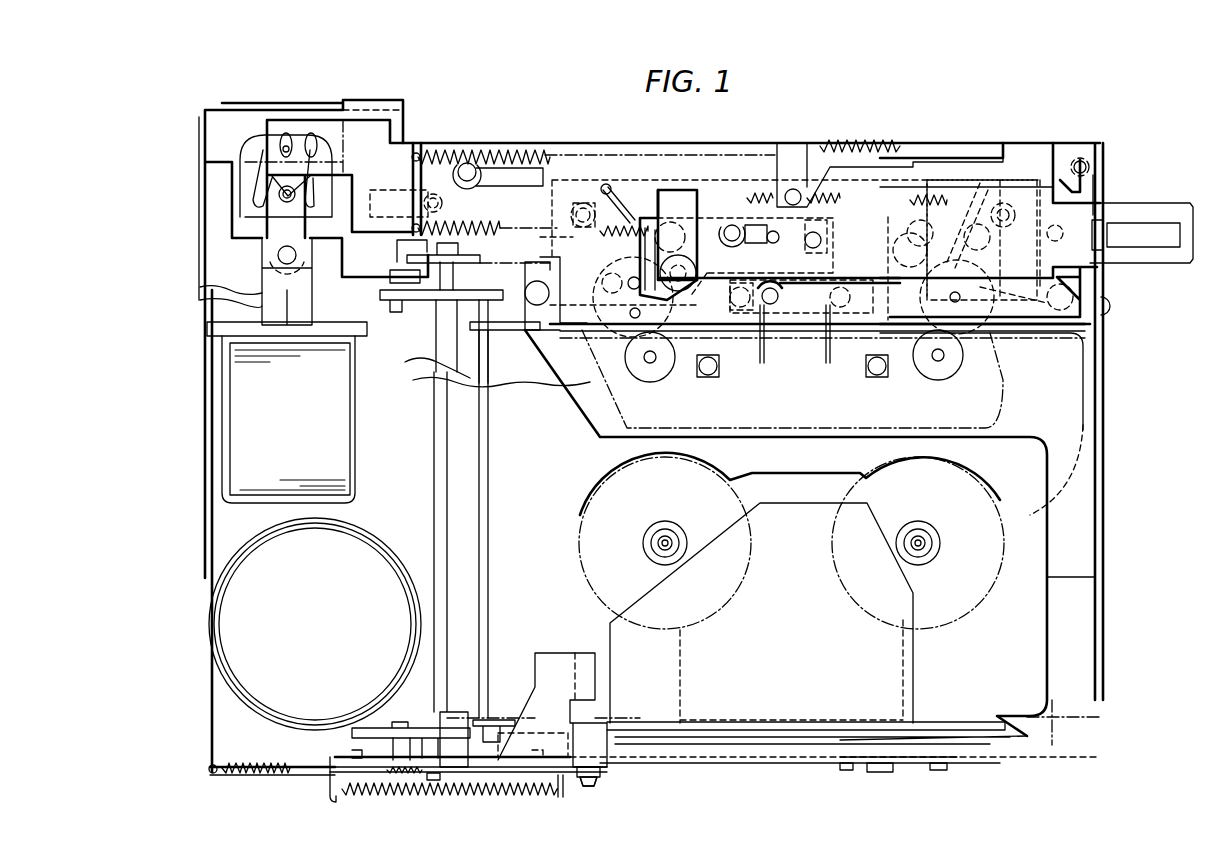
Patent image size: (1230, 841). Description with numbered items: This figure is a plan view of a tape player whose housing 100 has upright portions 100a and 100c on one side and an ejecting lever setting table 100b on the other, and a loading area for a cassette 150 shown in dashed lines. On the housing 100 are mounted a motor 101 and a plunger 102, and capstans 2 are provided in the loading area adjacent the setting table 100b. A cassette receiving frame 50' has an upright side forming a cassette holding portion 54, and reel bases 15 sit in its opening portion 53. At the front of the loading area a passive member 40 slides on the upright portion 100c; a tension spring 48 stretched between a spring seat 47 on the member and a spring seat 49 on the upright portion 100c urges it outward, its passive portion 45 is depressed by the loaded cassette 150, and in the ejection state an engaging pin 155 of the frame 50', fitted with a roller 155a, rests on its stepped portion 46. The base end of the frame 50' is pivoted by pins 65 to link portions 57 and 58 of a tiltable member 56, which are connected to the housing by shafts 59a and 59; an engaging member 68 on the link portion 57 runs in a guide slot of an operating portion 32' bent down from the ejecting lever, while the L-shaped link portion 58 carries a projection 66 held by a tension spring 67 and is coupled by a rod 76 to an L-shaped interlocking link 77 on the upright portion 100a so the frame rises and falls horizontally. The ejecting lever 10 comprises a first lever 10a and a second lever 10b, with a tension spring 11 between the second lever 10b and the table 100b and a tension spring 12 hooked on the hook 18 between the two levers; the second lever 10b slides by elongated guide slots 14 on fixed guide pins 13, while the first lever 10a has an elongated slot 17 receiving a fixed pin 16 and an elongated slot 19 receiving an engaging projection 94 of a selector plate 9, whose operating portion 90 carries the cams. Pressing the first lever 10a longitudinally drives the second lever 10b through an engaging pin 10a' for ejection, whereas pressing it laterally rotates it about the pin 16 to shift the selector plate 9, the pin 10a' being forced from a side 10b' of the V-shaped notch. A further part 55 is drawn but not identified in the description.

The capstan 2 is at (655, 362).
The selector plate 9 is at (1108, 297).
The ejecting lever 10 is at (995, 115).
The first lever 10a is at (982, 207).
The engaging pin 10a' is at (1124, 194).
The second lever 10b is at (941, 136).
The side of V-shaped notch 10b' is at (1101, 202).
The tension spring 11 is at (489, 152).
The tension spring 12 is at (494, 218).
The fixed guide pins 13 is at (463, 162).
The elongated guide slots 14 is at (520, 165).
The reel bases 15 is at (735, 495).
The fixed pin 16 is at (732, 223).
The elongated slot 17 is at (760, 222).
The hook 18 is at (652, 215).
The elongated slot 19 is at (1155, 225).
The operating portion 32' is at (395, 261).
The passive member 40 is at (487, 760).
The passive portion 45 is at (578, 658).
The stepped portion 46 is at (690, 759).
The spring seat 47 is at (335, 788).
The tension spring 48 is at (434, 781).
The spring seat 49 is at (586, 788).
The cassette receiving frame 50' is at (786, 533).
The opening portion 53 is at (578, 522).
The cassette holding portion 54 is at (890, 666).
The rod 55 is at (489, 588).
The tiltable member 56 is at (436, 466).
The link portion 57 is at (418, 302).
The link portion 58 is at (423, 728).
The shaft 59 is at (400, 745).
The shaft 59a is at (390, 304).
The pins 65 is at (492, 328).
The projection 66 is at (405, 776).
The tension spring 67 is at (292, 775).
The engaging member 68 is at (450, 270).
The rod 76 is at (735, 746).
The L-shaped interlocking link 77 is at (908, 758).
The operating portion 90 is at (1055, 500).
The engaging projection 94 is at (1113, 237).
The housing 100 is at (222, 746).
The upright portion 100a is at (800, 739).
The ejecting lever setting table 100b is at (1043, 330).
The upright portion 100c is at (335, 768).
The motor 101 is at (222, 656).
The plunger 102 is at (355, 418).
The cassette 150 is at (1052, 745).
The engaging pin 155 is at (610, 727).
The roller 155a is at (597, 770).